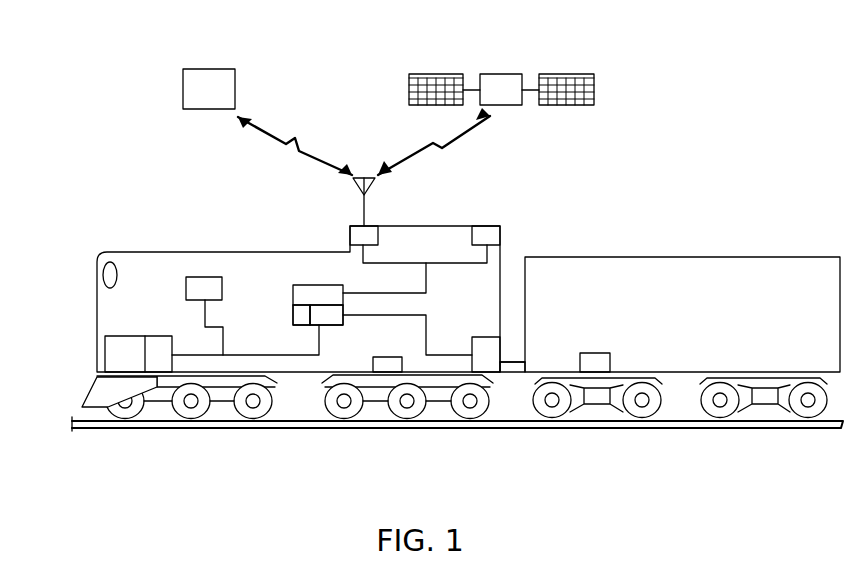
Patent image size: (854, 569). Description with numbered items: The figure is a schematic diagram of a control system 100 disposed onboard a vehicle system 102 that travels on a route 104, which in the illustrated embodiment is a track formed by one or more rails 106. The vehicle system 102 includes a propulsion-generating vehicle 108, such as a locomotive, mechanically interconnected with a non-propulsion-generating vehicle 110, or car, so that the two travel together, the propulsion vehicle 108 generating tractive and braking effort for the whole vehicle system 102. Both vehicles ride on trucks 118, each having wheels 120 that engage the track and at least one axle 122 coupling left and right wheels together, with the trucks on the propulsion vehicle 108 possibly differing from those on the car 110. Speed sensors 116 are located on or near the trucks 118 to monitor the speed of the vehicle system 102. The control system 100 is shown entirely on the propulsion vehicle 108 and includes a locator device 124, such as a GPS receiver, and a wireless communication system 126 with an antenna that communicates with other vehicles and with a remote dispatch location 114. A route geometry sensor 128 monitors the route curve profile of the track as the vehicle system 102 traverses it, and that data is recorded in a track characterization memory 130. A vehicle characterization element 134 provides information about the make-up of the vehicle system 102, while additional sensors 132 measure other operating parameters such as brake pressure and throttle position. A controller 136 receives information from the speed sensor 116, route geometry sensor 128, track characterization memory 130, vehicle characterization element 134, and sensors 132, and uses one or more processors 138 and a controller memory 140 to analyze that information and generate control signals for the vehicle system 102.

The control system 100 is at (222, 197).
The vehicle system 102 is at (539, 241).
The route 104 is at (88, 429).
The rail 106 is at (290, 429).
The propulsion-generating vehicle 108 is at (250, 252).
The non-propulsion-generating vehicle 110 is at (683, 257).
The dispatch location 114 is at (209, 68).
The speed sensor 116 is at (382, 357).
The truck 118 is at (440, 380).
The wheel 120 is at (344, 419).
The axle 122 is at (348, 408).
The locator device 124 is at (472, 237).
The wireless communication system 126 is at (378, 235).
The route geometry sensor 128 is at (97, 352).
The track characterization memory 130 is at (152, 336).
The additional sensors 132 is at (483, 337).
The vehicle characterization element 134 is at (205, 276).
The controller 136 is at (320, 285).
The processor 138 is at (337, 325).
The controller memory 140 is at (293, 311).